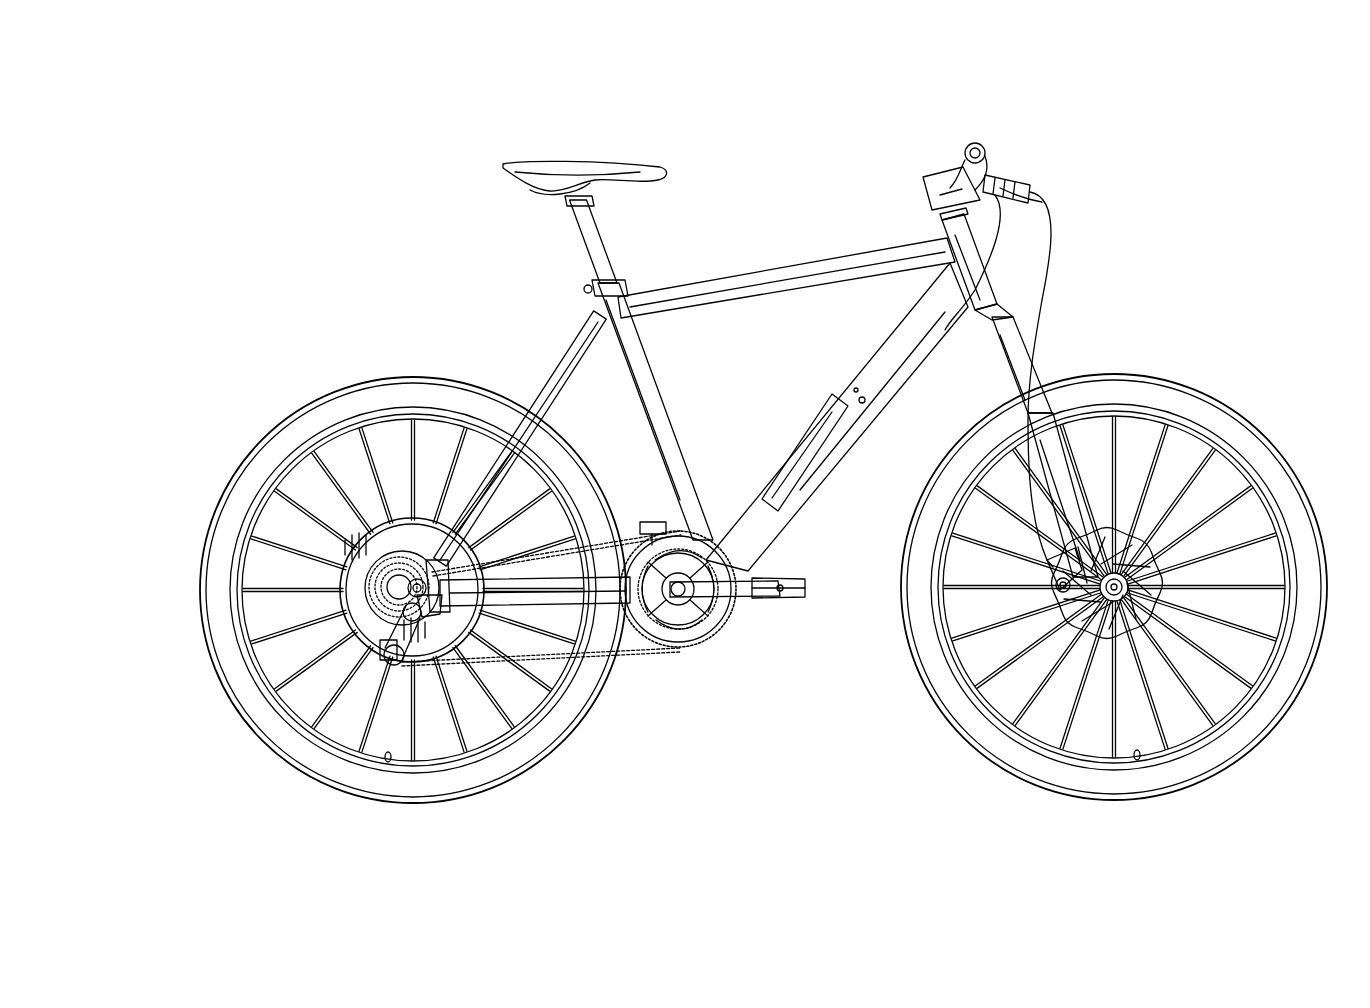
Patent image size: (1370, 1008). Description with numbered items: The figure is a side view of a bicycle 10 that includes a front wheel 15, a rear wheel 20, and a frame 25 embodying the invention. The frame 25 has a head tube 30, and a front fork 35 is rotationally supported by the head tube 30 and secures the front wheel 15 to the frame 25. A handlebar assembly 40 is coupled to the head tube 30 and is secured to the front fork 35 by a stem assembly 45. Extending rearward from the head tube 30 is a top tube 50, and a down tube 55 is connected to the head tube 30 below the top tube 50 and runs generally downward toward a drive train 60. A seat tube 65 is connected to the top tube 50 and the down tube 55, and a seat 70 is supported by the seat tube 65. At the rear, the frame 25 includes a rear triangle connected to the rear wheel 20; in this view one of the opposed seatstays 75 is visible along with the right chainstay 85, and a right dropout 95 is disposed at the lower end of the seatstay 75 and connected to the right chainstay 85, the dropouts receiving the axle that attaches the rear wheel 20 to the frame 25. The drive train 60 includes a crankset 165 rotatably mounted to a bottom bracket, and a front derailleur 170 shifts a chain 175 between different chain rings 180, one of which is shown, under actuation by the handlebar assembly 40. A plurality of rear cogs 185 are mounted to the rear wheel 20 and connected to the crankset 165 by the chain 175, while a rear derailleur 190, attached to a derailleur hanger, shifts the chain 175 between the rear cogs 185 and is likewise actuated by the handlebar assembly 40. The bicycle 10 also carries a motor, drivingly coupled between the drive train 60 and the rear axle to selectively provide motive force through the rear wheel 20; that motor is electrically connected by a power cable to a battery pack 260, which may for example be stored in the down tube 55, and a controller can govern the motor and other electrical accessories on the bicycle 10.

The bicycle 10 is at (1138, 112).
The front wheel 15 is at (1175, 390).
The rear wheel 20 is at (330, 393).
The frame 25 is at (783, 262).
The head tube 30 is at (980, 282).
The front fork 35 is at (1020, 363).
The handlebar assembly 40 is at (986, 160).
The stem assembly 45 is at (945, 185).
The top tube 50 is at (670, 293).
The down tube 55 is at (908, 334).
The drive train 60 is at (625, 688).
The seat tube 65 is at (650, 398).
The seat 70 is at (568, 162).
The seatstay 75 is at (563, 367).
The right chainstay 85 is at (540, 600).
The right dropout 95 is at (455, 645).
The crankset 165 is at (730, 598).
The front derailleur 170 is at (650, 522).
The chain 175 is at (648, 650).
The chain ring 180 is at (735, 553).
The rear cogs 185 is at (373, 584).
The rear derailleur 190 is at (428, 630).
The battery pack 260 is at (820, 420).